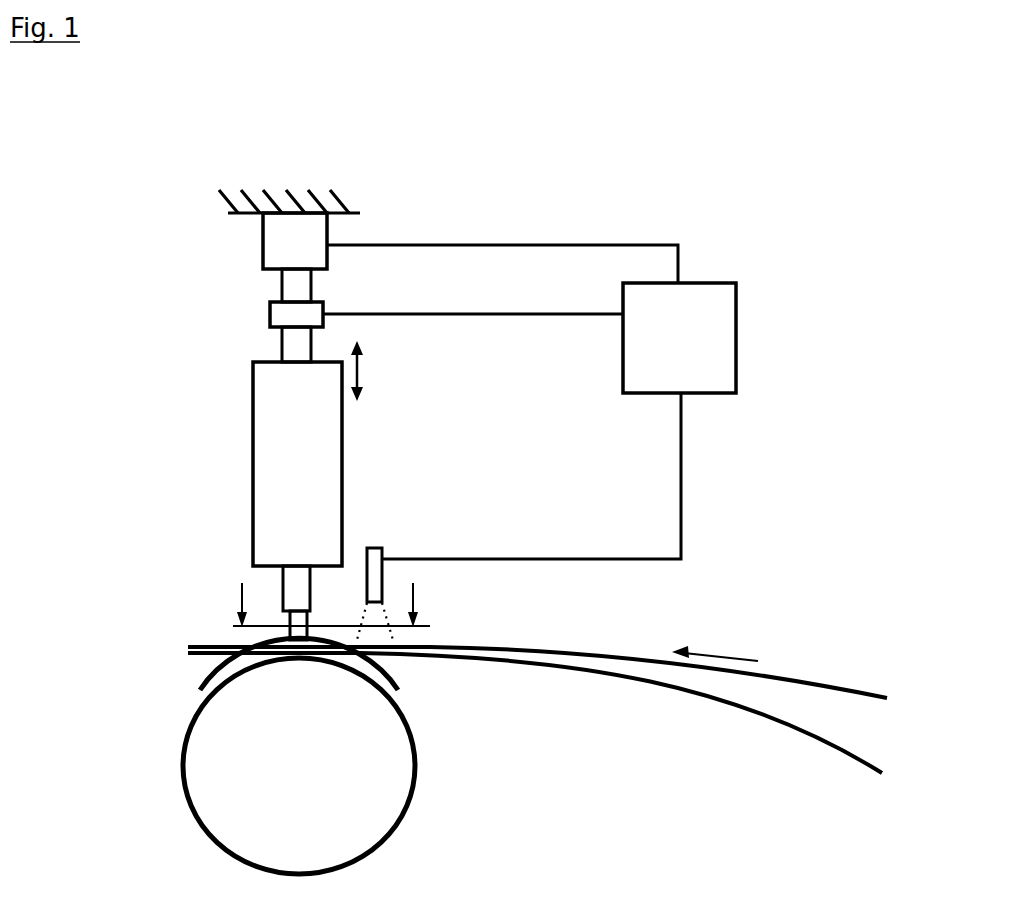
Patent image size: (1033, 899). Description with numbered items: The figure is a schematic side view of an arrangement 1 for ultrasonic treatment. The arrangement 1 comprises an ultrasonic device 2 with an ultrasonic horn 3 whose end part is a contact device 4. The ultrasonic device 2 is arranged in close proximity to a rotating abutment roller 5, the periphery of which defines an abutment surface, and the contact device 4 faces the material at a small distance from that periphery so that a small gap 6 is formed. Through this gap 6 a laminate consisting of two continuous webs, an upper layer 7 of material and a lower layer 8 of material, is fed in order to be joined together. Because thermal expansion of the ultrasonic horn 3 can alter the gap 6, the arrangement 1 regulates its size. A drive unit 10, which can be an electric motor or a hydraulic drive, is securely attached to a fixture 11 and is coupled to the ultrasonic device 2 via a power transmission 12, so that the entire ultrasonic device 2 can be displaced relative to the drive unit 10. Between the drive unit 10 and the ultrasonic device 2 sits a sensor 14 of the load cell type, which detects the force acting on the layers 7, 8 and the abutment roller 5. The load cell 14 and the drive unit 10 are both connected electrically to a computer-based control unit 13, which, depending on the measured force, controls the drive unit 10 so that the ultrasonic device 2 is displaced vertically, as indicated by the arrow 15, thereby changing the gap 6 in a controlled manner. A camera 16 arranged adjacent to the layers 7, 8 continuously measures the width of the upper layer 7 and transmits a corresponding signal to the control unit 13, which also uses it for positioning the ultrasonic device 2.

The arrangement 1 is at (412, 167).
The ultrasonic device 2 is at (258, 520).
The ultrasonic horn 3 is at (288, 578).
The contact device 4 is at (290, 633).
The abutment roller 5 is at (193, 787).
The gap 6 is at (293, 666).
The upper layer of material 7 is at (793, 682).
The lower layer of material 8 is at (755, 707).
The drive unit 10 is at (270, 252).
The fixture 11 is at (250, 192).
The power transmission 12 is at (290, 286).
The control unit 13 is at (713, 300).
The sensor 14 is at (285, 315).
The arrow 15 is at (358, 371).
The camera 16 is at (374, 547).